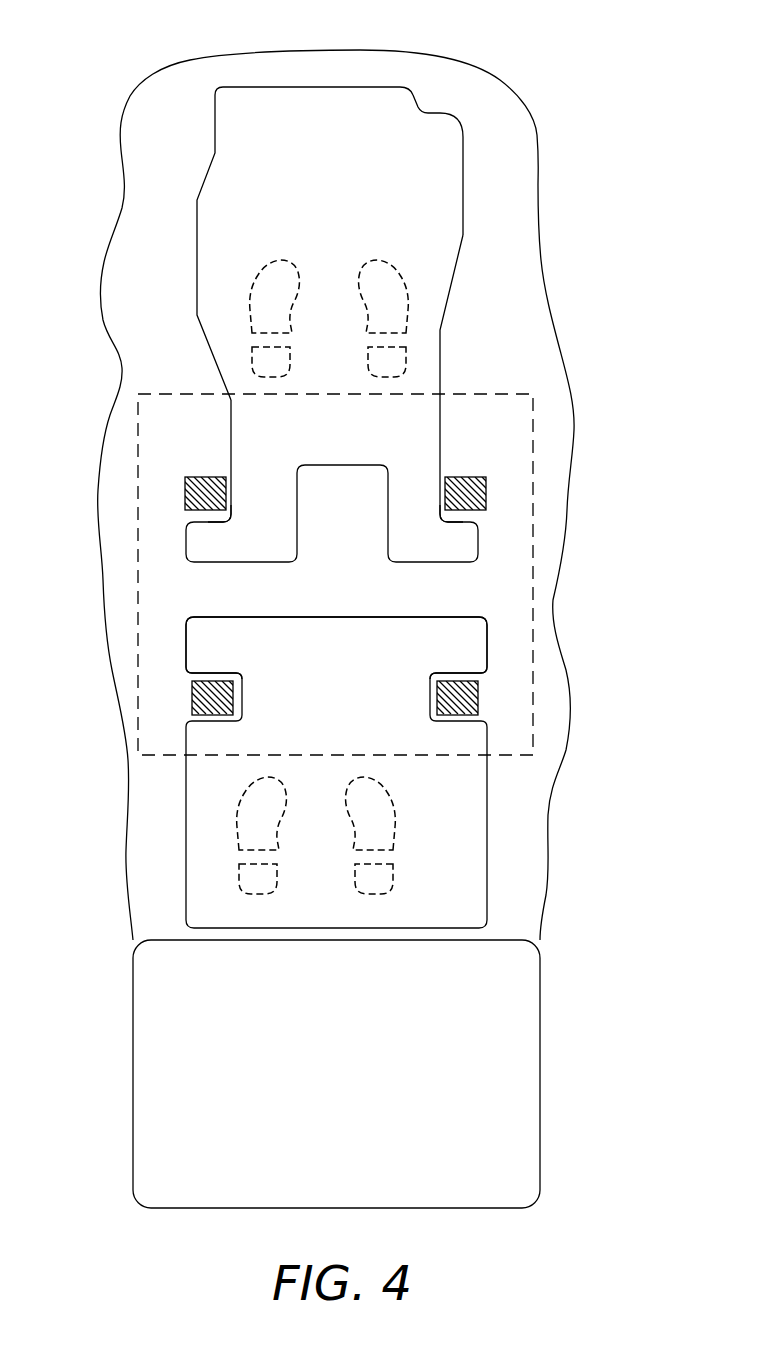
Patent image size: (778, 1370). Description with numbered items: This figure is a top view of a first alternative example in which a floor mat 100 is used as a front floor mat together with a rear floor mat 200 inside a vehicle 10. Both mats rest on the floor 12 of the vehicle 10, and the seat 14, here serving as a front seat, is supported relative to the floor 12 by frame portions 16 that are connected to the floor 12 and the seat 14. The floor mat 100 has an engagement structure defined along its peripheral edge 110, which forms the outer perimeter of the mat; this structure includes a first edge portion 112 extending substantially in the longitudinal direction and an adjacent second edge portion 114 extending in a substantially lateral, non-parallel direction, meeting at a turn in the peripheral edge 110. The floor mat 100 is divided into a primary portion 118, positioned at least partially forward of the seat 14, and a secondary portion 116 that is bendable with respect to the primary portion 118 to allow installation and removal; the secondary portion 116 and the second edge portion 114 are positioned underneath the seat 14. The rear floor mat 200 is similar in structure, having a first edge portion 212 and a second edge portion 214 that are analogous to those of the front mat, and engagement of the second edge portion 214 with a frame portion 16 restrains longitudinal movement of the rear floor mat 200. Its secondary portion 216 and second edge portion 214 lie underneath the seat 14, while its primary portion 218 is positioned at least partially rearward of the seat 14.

The vehicle 10 is at (505, 62).
The floor 12 is at (525, 183).
The seat 14 is at (533, 428).
The frame portion 16 is at (217, 477).
The floor mat 100 is at (482, 144).
The peripheral edge 110 is at (442, 342).
The first edge portion 112 is at (230, 410).
The second edge portion 114 is at (207, 524).
The secondary portion 116 is at (205, 577).
The primary portion 118 is at (541, 1069).
The rear floor mat 200 is at (517, 878).
The first edge portion 212 is at (245, 697).
The second edge portion 214 is at (213, 673).
The secondary portion 216 is at (517, 642).
The primary portion 218 is at (517, 802).